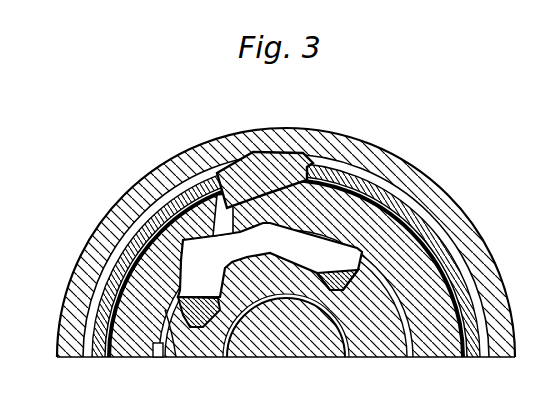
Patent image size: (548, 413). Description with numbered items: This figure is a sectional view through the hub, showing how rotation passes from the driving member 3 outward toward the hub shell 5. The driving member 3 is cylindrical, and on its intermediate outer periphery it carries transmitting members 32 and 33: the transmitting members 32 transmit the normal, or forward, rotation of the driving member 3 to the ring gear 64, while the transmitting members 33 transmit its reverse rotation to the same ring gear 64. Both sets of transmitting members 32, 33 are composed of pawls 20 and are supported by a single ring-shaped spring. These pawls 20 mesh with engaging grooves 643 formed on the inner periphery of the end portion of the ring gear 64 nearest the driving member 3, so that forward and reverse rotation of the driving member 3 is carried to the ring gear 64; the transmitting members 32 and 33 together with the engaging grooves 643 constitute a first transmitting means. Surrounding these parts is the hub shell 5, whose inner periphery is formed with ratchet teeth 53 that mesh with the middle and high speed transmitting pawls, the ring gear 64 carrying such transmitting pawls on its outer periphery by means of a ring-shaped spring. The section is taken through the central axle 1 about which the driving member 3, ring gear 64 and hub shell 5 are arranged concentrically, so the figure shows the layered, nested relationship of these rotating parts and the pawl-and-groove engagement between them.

The shaft 1 is at (268, 357).
The driving member 3 is at (180, 357).
The hub shell 5 is at (430, 181).
The pawls 20 is at (272, 128).
The transmitting members 32 is at (198, 325).
The transmitting members 33 is at (345, 295).
The ratchet teeth 53 is at (300, 150).
The ring gear 64 is at (147, 218).
The engaging grooves 643 is at (323, 233).